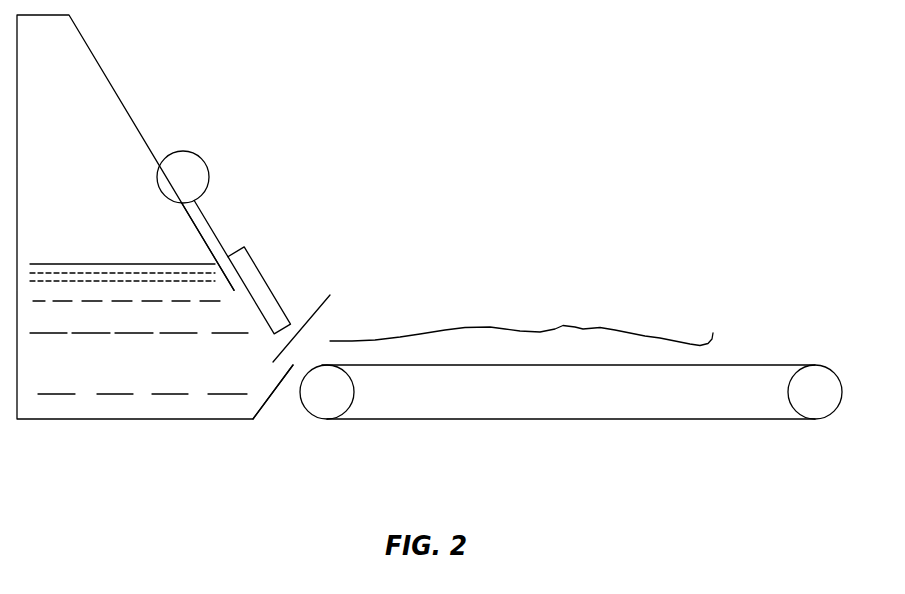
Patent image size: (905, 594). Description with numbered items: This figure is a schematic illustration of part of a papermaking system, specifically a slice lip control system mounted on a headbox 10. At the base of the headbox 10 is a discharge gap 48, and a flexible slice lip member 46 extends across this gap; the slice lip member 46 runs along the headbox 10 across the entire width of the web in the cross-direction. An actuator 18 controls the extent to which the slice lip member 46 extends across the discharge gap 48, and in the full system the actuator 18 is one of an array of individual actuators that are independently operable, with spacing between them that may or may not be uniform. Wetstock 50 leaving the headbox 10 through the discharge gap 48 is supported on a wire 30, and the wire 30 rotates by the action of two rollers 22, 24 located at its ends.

The headbox 10 is at (155, 243).
The actuator 18 is at (209, 157).
The slice lip member 46 is at (267, 267).
The discharge gap 48 is at (330, 295).
The wetstock 50 is at (521, 317).
The roller 22 is at (357, 418).
The roller 24 is at (827, 418).
The wire 30 is at (568, 418).